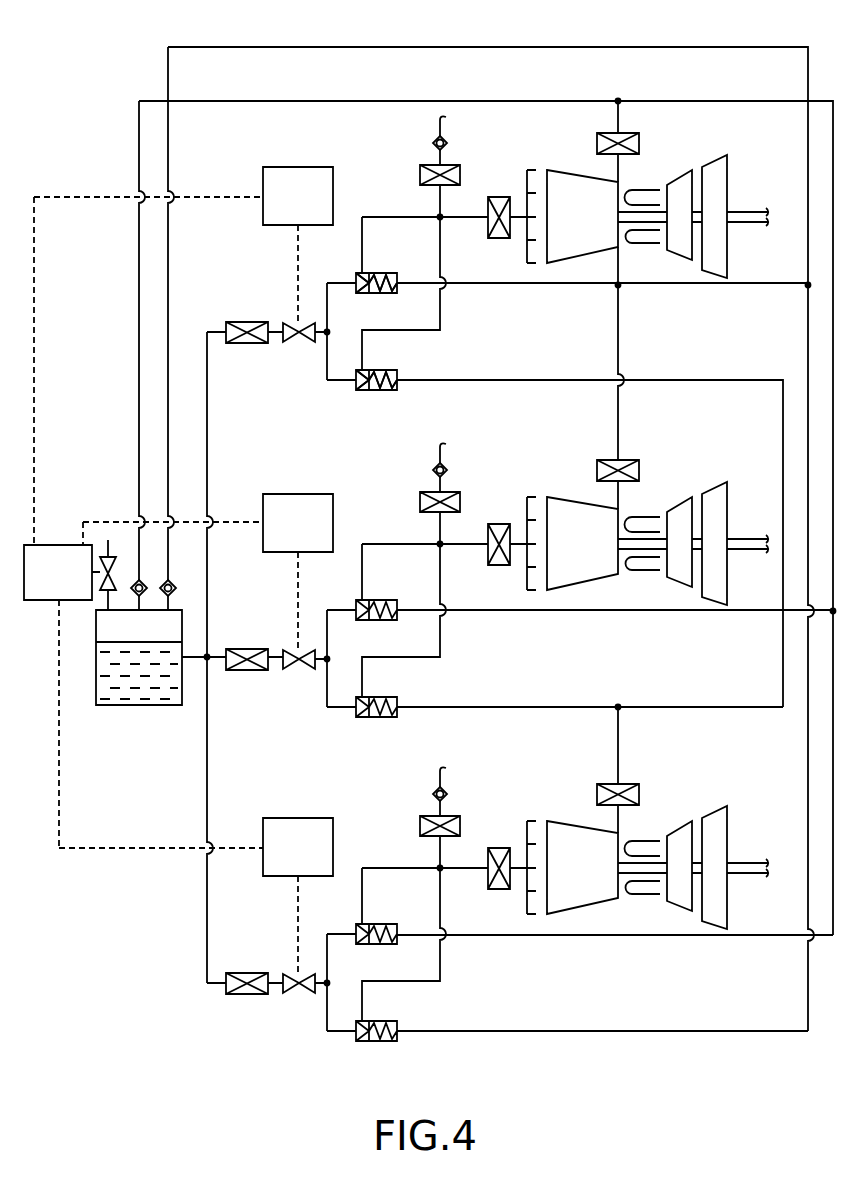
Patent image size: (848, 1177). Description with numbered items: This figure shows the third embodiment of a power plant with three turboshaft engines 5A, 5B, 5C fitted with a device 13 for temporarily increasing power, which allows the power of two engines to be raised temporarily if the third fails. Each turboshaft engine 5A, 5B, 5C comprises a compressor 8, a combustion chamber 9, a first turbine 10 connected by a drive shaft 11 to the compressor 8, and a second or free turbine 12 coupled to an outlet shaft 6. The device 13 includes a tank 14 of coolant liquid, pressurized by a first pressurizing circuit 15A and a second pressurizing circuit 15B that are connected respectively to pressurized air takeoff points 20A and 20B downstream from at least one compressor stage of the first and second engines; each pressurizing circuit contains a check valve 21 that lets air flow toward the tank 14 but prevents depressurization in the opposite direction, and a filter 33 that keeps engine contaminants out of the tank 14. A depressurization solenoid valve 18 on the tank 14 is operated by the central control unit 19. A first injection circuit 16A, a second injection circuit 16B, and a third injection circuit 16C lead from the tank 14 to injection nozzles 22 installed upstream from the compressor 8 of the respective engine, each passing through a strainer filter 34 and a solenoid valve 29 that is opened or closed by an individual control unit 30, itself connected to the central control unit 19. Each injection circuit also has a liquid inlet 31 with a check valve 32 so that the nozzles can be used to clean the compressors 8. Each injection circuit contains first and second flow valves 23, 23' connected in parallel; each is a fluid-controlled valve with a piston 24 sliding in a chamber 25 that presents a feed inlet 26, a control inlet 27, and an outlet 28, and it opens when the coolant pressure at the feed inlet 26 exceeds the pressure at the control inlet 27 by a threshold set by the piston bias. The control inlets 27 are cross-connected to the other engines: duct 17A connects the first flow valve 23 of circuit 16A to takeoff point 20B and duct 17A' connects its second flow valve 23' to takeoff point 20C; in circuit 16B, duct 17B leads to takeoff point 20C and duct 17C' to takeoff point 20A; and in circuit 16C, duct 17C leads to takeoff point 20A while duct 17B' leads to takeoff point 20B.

The first turboshaft engine 5A is at (691, 124).
The second turboshaft engine 5B is at (691, 448).
The third turboshaft engine 5C is at (691, 773).
The outlet shaft 6 is at (760, 226).
The compressor 8 is at (576, 225).
The combustion chamber 9 is at (640, 244).
The first turbine 10 is at (675, 179).
The drive shaft 11 is at (618, 222).
The second turbine 12 is at (715, 165).
The device for temporarily increasing power 13 is at (176, 910).
The tank 14 is at (134, 705).
The first pressurizing circuit 15A is at (229, 100).
The second pressurizing circuit 15B is at (225, 47).
The first coolant liquid injection circuit 16A is at (207, 330).
The second coolant liquid injection circuit 16B is at (214, 650).
The third coolant liquid injection circuit 16C is at (207, 983).
The duct 17A is at (602, 302).
The duct 17A' is at (590, 543).
The duct 17B is at (590, 725).
The duct 17B' is at (615, 628).
The duct 17C is at (615, 952).
The duct 17C' is at (602, 1048).
The depressurization solenoid valve 18 is at (110, 543).
The central control unit 19 is at (48, 583).
The pressurized air takeoff point 20A is at (620, 189).
The pressurized air takeoff point 20B is at (620, 516).
The pressurized air takeoff point 20C is at (620, 840).
The check valve 21 is at (171, 582).
The injection nozzles 22 is at (529, 168).
The first flow valve 23 is at (376, 623).
The second flow valve 23' is at (377, 720).
The piston 24 is at (376, 273).
The chamber 25 is at (398, 291).
The feed inlet 26 is at (360, 294).
The control inlet 27 is at (400, 282).
The outlet 28 is at (360, 275).
The solenoid valve 29 is at (287, 323).
The individual control unit 30 is at (287, 207).
The liquid inlet 31 is at (447, 113).
The check valve 32 is at (447, 143).
The filter 33 is at (597, 145).
The strainer filter 34 is at (421, 165).